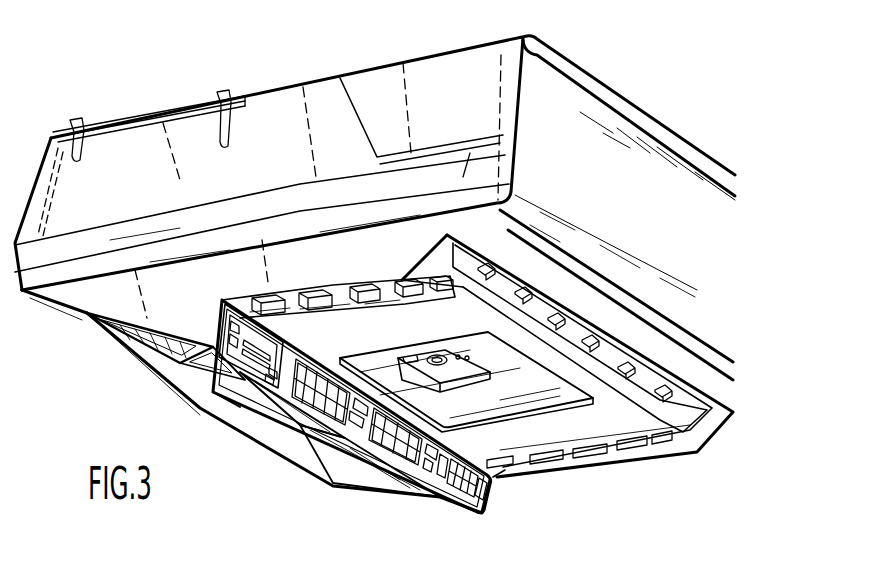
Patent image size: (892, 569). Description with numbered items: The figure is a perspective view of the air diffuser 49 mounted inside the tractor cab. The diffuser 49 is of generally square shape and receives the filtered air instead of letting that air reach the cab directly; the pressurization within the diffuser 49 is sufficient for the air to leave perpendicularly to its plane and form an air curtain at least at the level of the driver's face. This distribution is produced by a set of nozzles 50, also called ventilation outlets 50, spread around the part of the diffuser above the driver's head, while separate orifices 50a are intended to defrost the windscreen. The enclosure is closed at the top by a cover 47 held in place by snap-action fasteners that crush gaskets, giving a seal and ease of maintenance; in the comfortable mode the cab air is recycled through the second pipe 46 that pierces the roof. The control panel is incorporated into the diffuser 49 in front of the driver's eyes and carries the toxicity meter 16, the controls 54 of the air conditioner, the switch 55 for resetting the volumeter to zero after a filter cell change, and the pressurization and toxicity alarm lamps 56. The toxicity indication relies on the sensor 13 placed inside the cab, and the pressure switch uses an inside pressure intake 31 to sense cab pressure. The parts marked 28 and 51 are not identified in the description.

The sensor 13 is at (410, 380).
The toxicity meter 16 is at (334, 415).
The housing 28 is at (24, 188).
The inside pressure intake 31 is at (460, 357).
The second pipe 46 is at (232, 420).
The cover 47 is at (164, 110).
The diffuser 49 is at (118, 294).
The nozzles 50 is at (360, 310).
The orifices 50a is at (230, 371).
The hinge bracket arm 51 is at (268, 425).
The controls of the air conditioner 54 is at (170, 367).
The switch 55 is at (497, 493).
The pressurization and toxicity alarm lamps 56 is at (320, 470).